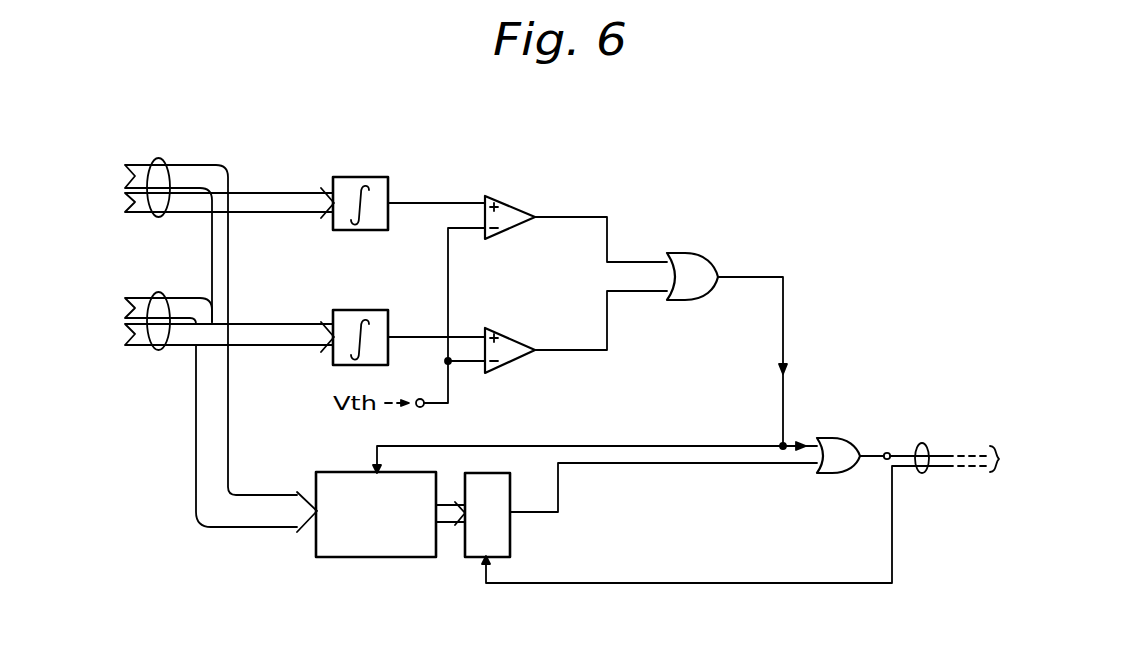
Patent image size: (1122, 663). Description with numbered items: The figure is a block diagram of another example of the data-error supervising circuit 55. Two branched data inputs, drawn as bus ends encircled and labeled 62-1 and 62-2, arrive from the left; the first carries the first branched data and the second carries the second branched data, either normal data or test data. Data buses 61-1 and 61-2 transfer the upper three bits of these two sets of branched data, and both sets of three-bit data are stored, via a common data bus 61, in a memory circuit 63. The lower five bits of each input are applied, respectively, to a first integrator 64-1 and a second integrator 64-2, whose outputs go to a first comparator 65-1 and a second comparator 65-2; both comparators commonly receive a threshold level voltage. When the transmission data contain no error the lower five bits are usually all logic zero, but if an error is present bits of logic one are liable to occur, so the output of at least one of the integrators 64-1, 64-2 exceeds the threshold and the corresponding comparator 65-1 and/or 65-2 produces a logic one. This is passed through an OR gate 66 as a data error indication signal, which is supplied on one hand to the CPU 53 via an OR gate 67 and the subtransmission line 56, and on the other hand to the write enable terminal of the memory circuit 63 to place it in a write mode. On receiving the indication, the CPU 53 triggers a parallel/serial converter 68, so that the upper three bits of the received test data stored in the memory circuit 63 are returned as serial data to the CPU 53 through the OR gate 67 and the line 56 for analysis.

The CPU 53 is at (1035, 459).
The data-error supervising circuit 55 is at (600, 172).
The subtransmission line 56 is at (922, 443).
The data bus 61 is at (225, 433).
The data bus 61-1 is at (212, 168).
The data bus 61-2 is at (200, 298).
The first input signal D'1 (TD'1) 62-1 is at (188, 230).
The second input signal D'2 (TD'2) 62-2 is at (158, 368).
The memory circuit 63 is at (357, 557).
The first integrator 64-1 is at (370, 178).
The second integrator 64-2 is at (366, 310).
The first comparator 65-1 is at (512, 207).
The second comparator 65-2 is at (514, 339).
The OR gate 66 is at (699, 257).
The OR gate 67 is at (839, 439).
The parallel/serial converter 68 is at (511, 542).